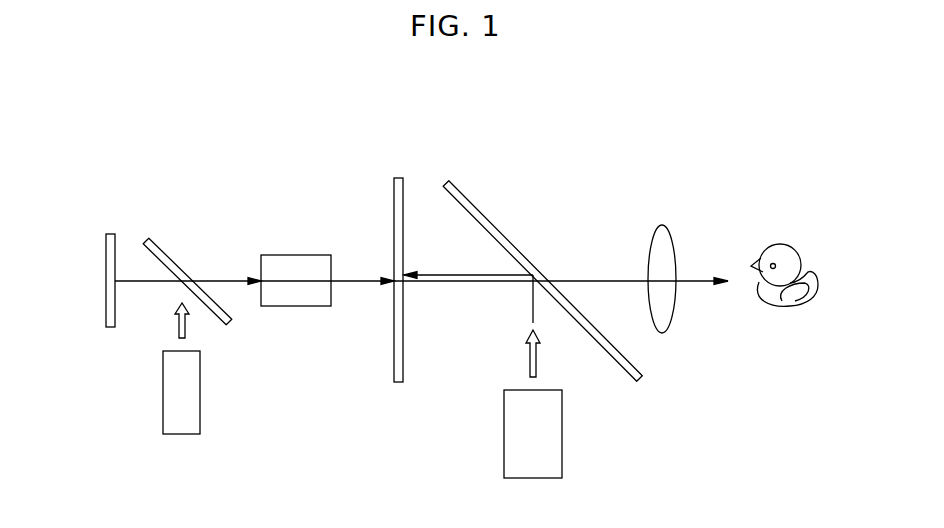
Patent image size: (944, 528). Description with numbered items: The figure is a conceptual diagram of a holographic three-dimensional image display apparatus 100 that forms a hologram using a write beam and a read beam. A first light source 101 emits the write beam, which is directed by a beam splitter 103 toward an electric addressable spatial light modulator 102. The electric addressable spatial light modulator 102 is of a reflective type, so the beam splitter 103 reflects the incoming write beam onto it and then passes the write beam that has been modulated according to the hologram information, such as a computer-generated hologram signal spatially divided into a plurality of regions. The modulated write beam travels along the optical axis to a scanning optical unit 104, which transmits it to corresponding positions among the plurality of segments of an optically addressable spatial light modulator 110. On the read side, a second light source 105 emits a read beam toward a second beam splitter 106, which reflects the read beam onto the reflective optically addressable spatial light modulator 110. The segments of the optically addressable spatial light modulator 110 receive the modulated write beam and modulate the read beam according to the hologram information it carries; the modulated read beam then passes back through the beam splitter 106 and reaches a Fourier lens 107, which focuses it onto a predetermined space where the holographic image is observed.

The holographic 3D image display apparatus 100 is at (335, 447).
The first light source 101 is at (181, 434).
The electric addressable spatial light modulator (EASLM) 102 is at (109, 234).
The beam splitter 103 is at (167, 250).
The scanning optical unit 104 is at (295, 255).
The second light source 105 is at (532, 478).
The beam splitter 106 is at (465, 192).
The Fourier lens 107 is at (660, 225).
The optically addressable spatial light modulator (OASLM) 110 is at (398, 178).